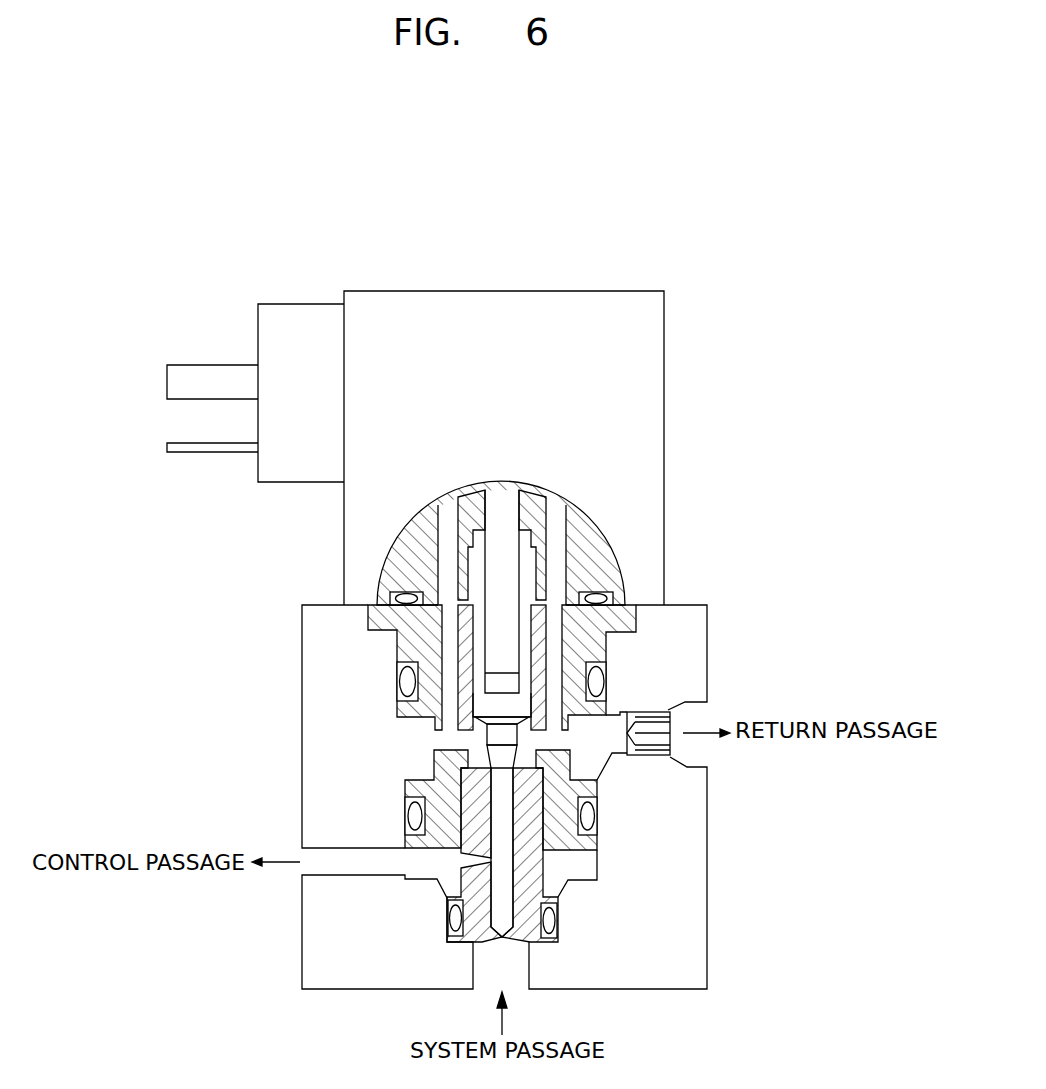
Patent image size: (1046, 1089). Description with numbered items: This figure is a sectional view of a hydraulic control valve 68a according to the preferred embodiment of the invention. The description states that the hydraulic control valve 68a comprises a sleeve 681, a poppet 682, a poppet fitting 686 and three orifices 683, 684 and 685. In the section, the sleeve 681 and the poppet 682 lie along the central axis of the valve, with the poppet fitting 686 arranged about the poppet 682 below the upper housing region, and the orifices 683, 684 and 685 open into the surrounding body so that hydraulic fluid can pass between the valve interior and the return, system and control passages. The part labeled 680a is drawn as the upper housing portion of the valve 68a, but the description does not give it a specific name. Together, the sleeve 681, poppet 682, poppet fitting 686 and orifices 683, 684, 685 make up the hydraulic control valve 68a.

The hydraulic control valve 68a is at (680, 553).
The solenoid housing 680a is at (653, 463).
The sleeve 681 is at (490, 557).
The poppet 682 is at (493, 706).
The orifice 683 is at (633, 733).
The orifice 684 is at (533, 941).
The orifice 685 is at (490, 859).
The poppet fitting 686 is at (370, 620).